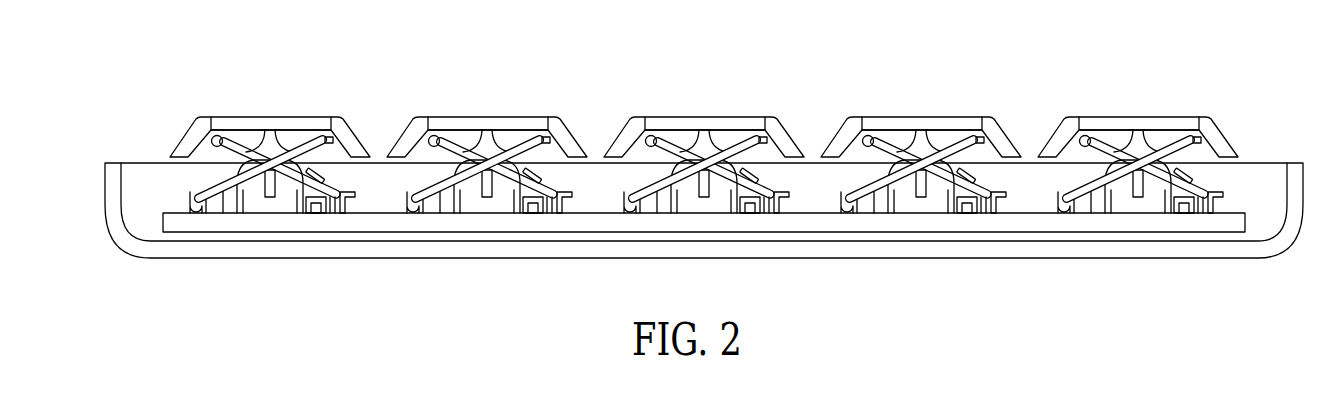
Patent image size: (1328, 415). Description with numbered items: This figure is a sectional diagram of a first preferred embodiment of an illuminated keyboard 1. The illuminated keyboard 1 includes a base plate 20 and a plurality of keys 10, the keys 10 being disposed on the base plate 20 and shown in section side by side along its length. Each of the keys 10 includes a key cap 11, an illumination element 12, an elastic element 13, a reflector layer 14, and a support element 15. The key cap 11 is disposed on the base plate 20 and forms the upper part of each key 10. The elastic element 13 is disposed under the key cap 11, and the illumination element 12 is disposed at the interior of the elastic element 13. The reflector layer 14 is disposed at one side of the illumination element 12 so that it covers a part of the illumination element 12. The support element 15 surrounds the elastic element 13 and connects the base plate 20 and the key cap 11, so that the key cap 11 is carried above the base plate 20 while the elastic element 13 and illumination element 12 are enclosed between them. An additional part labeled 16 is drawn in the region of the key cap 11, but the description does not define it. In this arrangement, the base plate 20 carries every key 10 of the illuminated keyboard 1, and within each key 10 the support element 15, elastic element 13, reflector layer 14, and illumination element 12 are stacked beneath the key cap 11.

The illuminated keyboard 1 is at (1140, 71).
The key 10 is at (271, 172).
The key cap 11 is at (199, 125).
The illumination element 12 is at (337, 214).
The elastic element 13 is at (275, 163).
The reflector layer 14 is at (314, 178).
The support element 15 is at (216, 183).
The keycap inner layer 16 is at (283, 126).
The base plate 20 is at (237, 222).